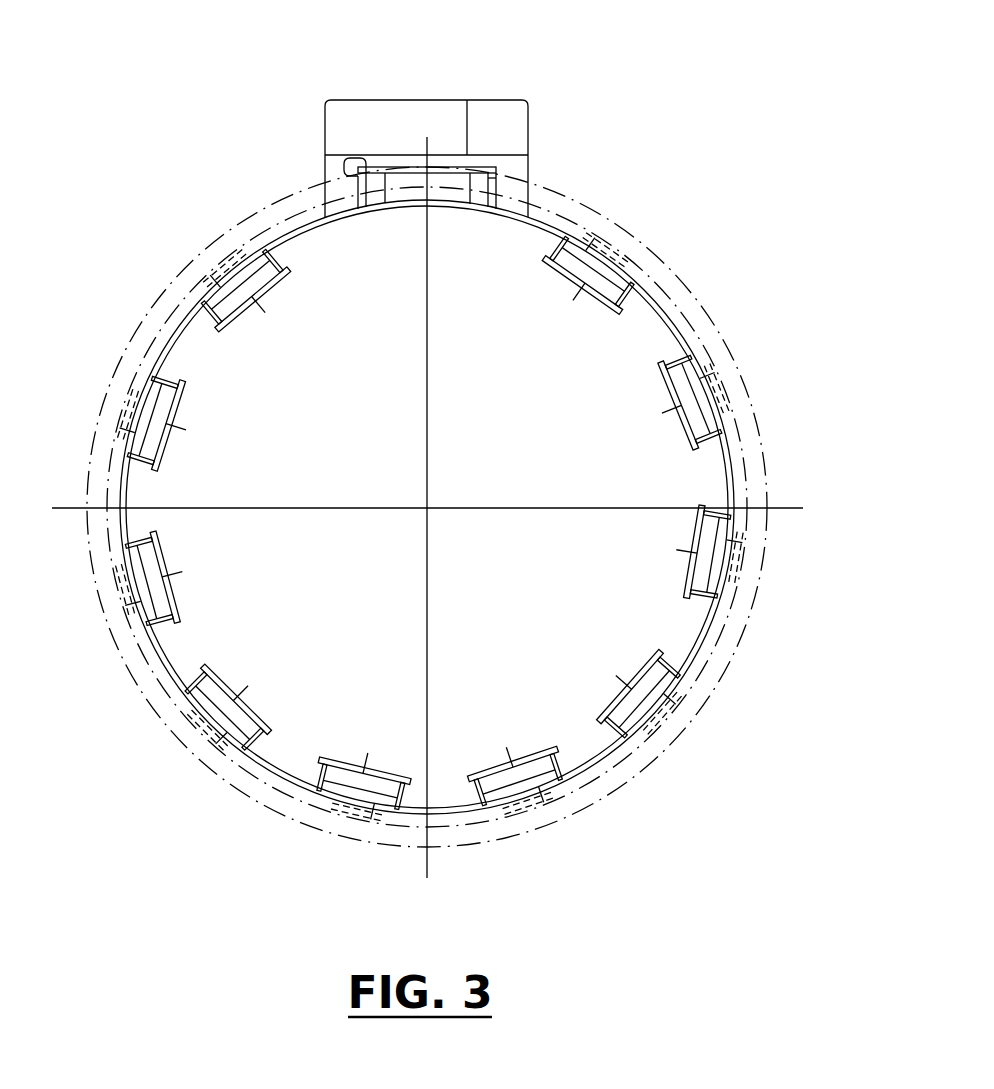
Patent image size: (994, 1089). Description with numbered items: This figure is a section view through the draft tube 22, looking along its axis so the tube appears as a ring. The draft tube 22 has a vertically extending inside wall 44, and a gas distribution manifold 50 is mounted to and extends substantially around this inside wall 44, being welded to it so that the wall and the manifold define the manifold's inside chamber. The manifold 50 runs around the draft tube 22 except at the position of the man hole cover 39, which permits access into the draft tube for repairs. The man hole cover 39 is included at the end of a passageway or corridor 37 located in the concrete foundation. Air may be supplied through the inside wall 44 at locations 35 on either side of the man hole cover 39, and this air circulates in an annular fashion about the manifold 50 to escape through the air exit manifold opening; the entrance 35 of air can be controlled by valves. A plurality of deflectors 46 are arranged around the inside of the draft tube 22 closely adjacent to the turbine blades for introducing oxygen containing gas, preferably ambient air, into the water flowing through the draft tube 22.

The draft tube 22 is at (471, 453).
The air supply locations 35 is at (356, 212).
The corridor 37 is at (407, 123).
The man hole cover 39 is at (483, 166).
The inside wall 44 is at (745, 468).
The deflectors 46 is at (196, 423).
The gas distribution manifold 50 is at (655, 320).